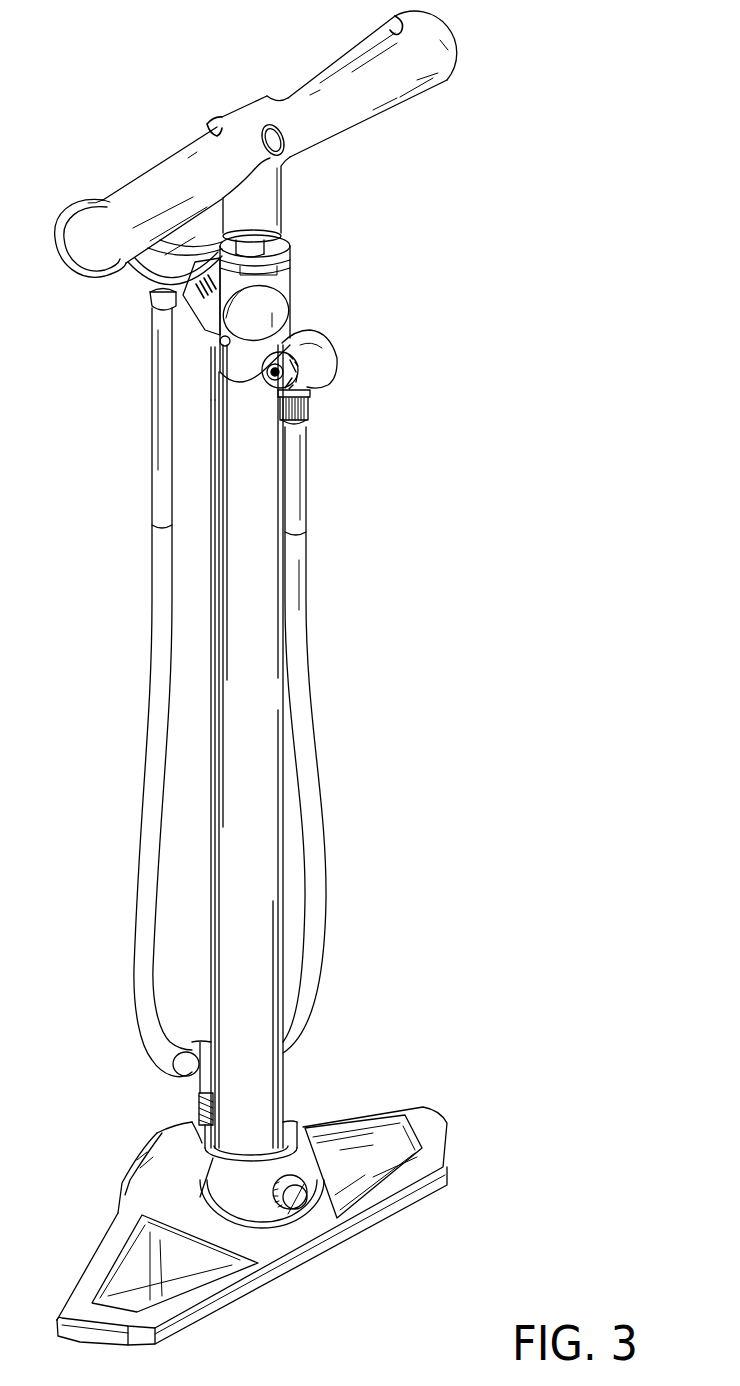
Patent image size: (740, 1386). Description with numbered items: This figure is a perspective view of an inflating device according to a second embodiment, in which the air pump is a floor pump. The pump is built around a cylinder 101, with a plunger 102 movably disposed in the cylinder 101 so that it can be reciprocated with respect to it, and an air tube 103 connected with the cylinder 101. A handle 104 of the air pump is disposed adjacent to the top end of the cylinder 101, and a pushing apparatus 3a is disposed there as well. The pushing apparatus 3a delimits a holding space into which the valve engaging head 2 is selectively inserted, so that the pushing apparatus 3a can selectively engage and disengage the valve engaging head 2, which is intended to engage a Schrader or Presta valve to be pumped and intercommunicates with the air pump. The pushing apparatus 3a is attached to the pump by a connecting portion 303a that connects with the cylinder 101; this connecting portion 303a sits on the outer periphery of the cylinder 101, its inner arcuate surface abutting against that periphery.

The handle 104 is at (450, 47).
The plunger 102 is at (255, 247).
The connecting portion 303a is at (243, 362).
The pushing apparatus 3a is at (346, 343).
The valve engaging head 2 is at (316, 375).
The air tube 103 is at (293, 488).
The cylinder 101 is at (240, 482).